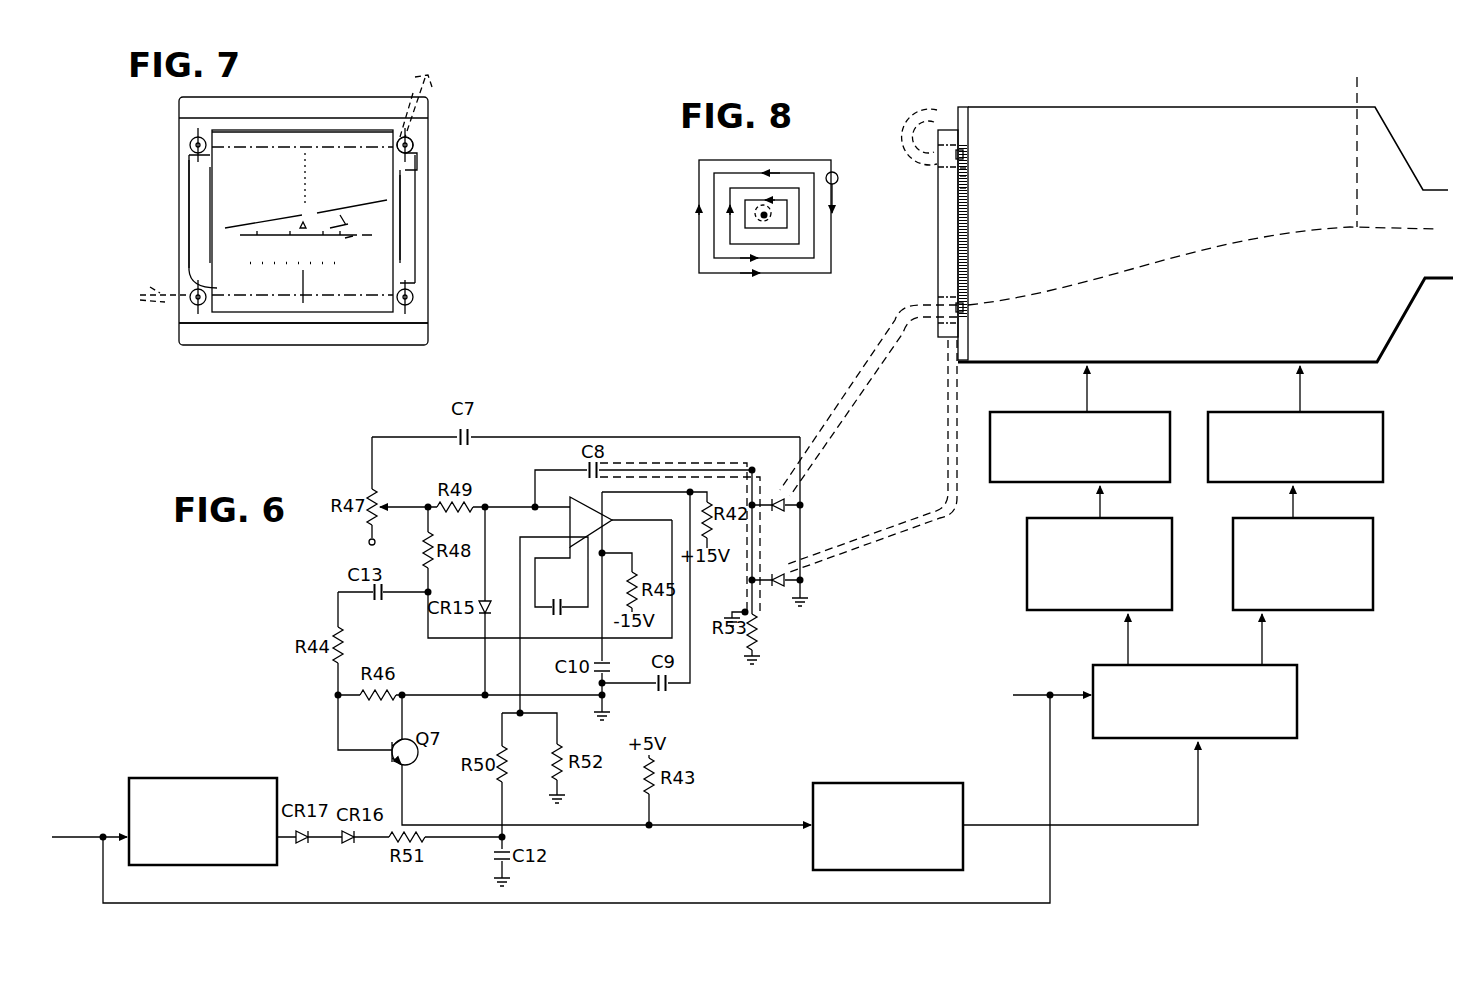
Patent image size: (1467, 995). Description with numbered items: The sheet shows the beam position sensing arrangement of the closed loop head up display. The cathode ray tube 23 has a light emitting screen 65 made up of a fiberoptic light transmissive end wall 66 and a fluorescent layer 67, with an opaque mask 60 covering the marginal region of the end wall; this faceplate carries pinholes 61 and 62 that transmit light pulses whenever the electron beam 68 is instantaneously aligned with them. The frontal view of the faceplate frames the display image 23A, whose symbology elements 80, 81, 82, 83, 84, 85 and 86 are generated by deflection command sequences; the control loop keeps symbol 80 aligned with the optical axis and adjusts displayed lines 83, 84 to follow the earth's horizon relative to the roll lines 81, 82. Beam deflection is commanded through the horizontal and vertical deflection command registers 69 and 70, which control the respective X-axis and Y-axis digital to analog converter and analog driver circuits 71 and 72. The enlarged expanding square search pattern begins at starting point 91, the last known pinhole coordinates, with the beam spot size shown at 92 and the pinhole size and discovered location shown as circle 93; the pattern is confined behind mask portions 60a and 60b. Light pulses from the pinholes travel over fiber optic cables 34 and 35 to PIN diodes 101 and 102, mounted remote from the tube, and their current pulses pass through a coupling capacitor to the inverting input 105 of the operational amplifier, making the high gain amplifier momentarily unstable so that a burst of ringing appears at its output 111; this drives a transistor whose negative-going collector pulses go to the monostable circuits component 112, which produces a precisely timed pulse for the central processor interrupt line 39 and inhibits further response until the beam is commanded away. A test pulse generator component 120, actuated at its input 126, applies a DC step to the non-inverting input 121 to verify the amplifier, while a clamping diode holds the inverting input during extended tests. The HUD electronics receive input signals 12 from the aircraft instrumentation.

In FIG. 6, the input signals 12 is at (1078, 692).
In FIG. 7, the cathode ray tube 23 is at (432, 342).
In FIG. 8, the cathode ray tube 23 is at (1117, 100).
In FIG. 7, the display image 23A is at (244, 191).
In FIG. 7, the fiber optic cable 34 is at (152, 283).
In FIG. 8, the fiber optic cable 34 is at (900, 342).
In FIG. 7, the fiber optic cable 35 is at (433, 82).
In FIG. 8, the fiber optic cable 35 is at (900, 125).
In FIG. 6, the central processor interrupt line 39 is at (1198, 772).
In FIG. 7, the opaque mask 60 is at (432, 250).
In FIG. 8, the opaque mask 60 is at (934, 207).
In FIG. 7, the mask portion 60a is at (212, 283).
In FIG. 7, the mask portion 60b is at (416, 173).
In FIG. 7, the pinhole 61 is at (196, 300).
In FIG. 8, the pinhole 61 is at (966, 314).
In FIG. 7, the pinhole 62 is at (408, 148).
In FIG. 8, the pinhole 62 is at (966, 176).
In FIG. 8, the light emitting screen 65 is at (968, 104).
In FIG. 8, the fiberoptic light transmissive end wall 66 is at (967, 168).
In FIG. 8, the fluorescent layer 67 is at (968, 188).
In FIG. 8, the electron beam 68 is at (1360, 141).
In FIG. 8, the horizontal deflection command register 69 is at (1027, 523).
In FIG. 8, the vertical deflection command register 70 is at (1373, 523).
In FIG. 8, the X-axis digital to analog converter and analog driver circuits 71 is at (1140, 412).
In FIG. 8, the Y-axis digital to analog converter and analog driver circuits 72 is at (1357, 412).
In FIG. 7, the symbol 80 is at (306, 230).
In FIG. 7, the line 81 is at (258, 233).
In FIG. 7, the line 82 is at (347, 233).
In FIG. 7, the displayed line 83 is at (270, 222).
In FIG. 7, the displayed line 84 is at (368, 203).
In FIG. 7, the symbology element 85 is at (200, 170).
In FIG. 7, the symbology element 86 is at (400, 190).
In FIG. 8, the starting point 91 is at (790, 206).
In FIG. 8, the beam spot size 92 is at (780, 222).
In FIG. 8, the pinhole size circle 93 is at (840, 178).
In FIG. 6, the PIN diode 101 is at (798, 512).
In FIG. 6, the PIN diode 102 is at (780, 590).
In FIG. 6, the inverting input 105 is at (540, 506).
In FIG. 6, the amplifier output 111 is at (640, 522).
In FIG. 6, the monostable circuits component 112 is at (902, 783).
In FIG. 6, the test pulse generator component 120 is at (200, 778).
In FIG. 6, the non-inverting input 121 is at (545, 537).
In FIG. 6, the test pulse generator input 126 is at (117, 833).